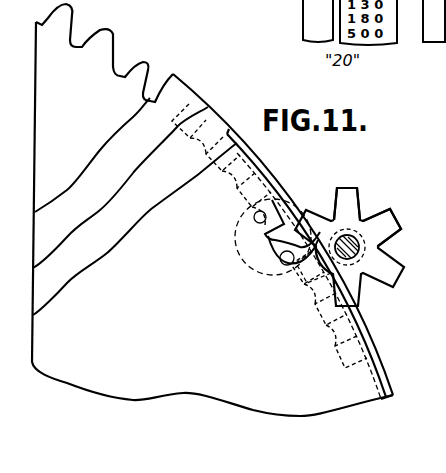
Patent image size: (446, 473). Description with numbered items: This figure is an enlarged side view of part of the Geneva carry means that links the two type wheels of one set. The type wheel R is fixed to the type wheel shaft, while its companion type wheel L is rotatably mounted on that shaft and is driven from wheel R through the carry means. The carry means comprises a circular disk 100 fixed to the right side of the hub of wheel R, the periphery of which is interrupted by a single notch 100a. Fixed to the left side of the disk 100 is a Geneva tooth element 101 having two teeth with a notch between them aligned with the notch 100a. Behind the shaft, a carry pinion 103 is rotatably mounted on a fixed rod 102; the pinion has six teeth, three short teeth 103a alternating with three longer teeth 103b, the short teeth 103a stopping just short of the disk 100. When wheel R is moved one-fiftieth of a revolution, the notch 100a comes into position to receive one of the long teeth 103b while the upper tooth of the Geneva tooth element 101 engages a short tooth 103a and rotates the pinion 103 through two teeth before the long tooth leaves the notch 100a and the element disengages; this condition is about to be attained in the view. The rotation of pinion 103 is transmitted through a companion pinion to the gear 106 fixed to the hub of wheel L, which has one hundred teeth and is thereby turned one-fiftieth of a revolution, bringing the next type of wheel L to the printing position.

The circular disk 100 is at (329, 403).
The notch 100a is at (283, 221).
The Geneva tooth element 101 is at (250, 267).
The fixed rod 102 is at (360, 248).
The carry pinion 103 is at (368, 279).
The short tooth 103a is at (355, 195).
The long tooth 103b is at (403, 210).
The gear 106 is at (143, 67).
The type wheel L is at (175, 73).
The type wheel R is at (209, 121).